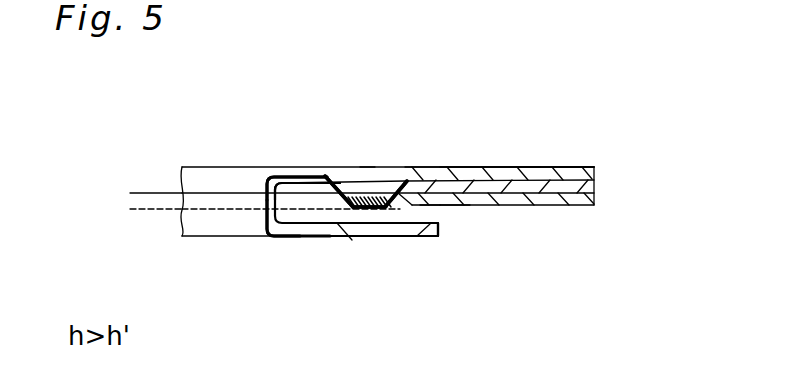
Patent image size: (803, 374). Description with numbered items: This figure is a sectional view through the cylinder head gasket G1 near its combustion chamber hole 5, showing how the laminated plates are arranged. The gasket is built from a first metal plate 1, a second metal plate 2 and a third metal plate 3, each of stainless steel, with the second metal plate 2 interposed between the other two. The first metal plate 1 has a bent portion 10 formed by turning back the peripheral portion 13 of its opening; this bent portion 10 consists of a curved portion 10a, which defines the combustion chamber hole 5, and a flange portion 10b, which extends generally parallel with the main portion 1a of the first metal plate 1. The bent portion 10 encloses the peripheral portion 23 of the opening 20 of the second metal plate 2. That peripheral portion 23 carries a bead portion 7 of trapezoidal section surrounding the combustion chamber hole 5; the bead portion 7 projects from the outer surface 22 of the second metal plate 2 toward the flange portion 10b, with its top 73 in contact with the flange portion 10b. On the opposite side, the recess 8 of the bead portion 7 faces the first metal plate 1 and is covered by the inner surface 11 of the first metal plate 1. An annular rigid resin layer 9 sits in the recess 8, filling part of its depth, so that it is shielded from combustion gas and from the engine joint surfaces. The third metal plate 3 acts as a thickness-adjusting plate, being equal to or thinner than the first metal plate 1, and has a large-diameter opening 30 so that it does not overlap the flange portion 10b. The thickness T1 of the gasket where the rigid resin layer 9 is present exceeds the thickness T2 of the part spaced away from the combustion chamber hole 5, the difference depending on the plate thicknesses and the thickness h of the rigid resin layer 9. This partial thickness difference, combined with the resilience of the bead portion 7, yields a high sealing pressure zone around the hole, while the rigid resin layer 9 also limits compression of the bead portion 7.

The first metal plate 1 is at (526, 178).
The main portion of the first metal plate 1a is at (453, 172).
The second metal plate 2 is at (594, 185).
The third metal plate 3 is at (594, 199).
The combustion chamber hole 5 is at (222, 182).
The bead portion 7 is at (378, 222).
The recess of the bead portion 8 is at (392, 186).
The rigid resin layer 9 is at (378, 190).
The bent portion 10 is at (404, 253).
The peripheral portion of the opening of the first metal plate 13 is at (302, 234).
The curved portion 10a is at (270, 226).
The flange portion 10b is at (410, 237).
The inner surface of the first metal plate 11 is at (348, 184).
The opening of the second metal plate 20 is at (283, 178).
The outer surface of the second metal plate 22 is at (432, 200).
The peripheral portion of the opening of the second metal plate 23 is at (305, 182).
The opening of the third metal plate 30 is at (455, 206).
The top of the bead portion 73 is at (340, 222).
The cylinder head gasket G1 is at (583, 163).
The thickness of the gasket part with the rigid resin layer T1 is at (367, 128).
The thickness of the gasket part outside the resin layer T2 is at (530, 130).
The thickness of the rigid resin layer h is at (145, 163).